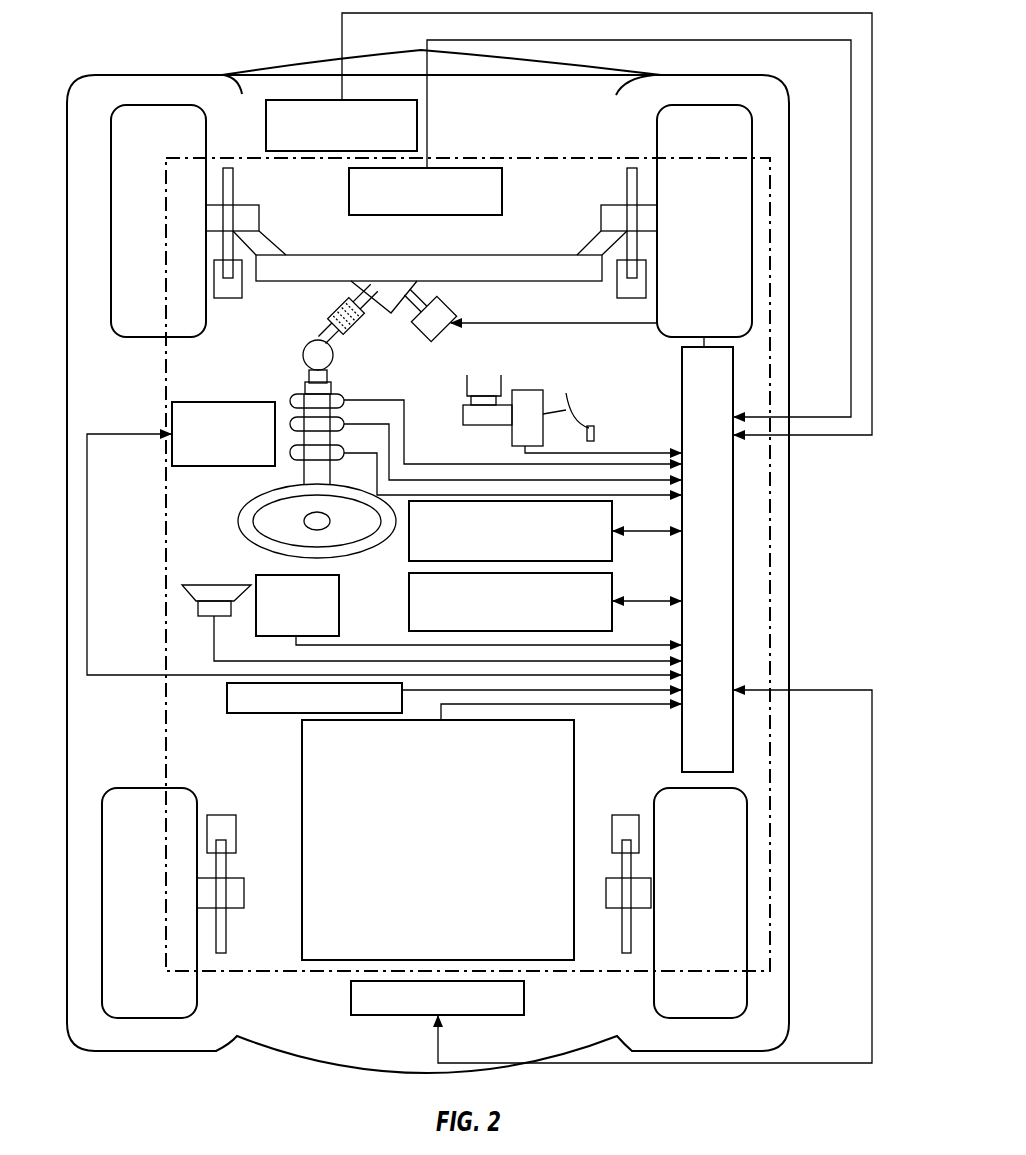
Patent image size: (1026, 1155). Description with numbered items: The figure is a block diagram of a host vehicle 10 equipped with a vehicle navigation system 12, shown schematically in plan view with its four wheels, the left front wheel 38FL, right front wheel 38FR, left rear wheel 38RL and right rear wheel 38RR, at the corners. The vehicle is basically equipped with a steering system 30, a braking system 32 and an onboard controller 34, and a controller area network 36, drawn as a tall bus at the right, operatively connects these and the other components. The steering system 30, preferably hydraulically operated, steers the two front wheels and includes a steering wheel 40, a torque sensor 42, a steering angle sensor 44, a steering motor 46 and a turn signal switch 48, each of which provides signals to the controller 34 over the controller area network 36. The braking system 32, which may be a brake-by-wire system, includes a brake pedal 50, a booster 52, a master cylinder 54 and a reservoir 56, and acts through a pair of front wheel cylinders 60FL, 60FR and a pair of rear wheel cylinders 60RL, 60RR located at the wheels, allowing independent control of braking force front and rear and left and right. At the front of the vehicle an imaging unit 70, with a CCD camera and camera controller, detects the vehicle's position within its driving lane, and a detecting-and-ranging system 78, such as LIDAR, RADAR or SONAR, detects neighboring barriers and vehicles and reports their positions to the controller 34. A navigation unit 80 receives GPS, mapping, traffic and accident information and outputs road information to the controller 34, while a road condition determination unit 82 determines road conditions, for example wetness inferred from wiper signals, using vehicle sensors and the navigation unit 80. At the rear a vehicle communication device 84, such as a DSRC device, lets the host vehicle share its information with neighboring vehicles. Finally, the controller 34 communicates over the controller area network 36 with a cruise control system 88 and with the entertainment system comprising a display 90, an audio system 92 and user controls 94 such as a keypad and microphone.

The host vehicle 10 is at (152, 44).
The vehicle navigation system 12 is at (163, 491).
The steering system 30 is at (195, 558).
The braking system 32 is at (534, 400).
The controller 34 is at (303, 760).
The controller area network 36 is at (683, 740).
The left front wheel 38FL is at (207, 147).
The right front wheel 38FR is at (658, 143).
The left rear wheel 38RL is at (198, 995).
The right rear wheel 38RR is at (653, 990).
The steering wheel 40 is at (245, 520).
The torque sensor 42 is at (300, 462).
The steering angle sensor 44 is at (295, 420).
The steering motor 46 is at (422, 338).
The turn signal switch 48 is at (298, 392).
The brake pedal 50 is at (597, 435).
The booster 52 is at (530, 392).
The master cylinder 54 is at (464, 412).
The reservoir 56 is at (468, 382).
The front wheel cylinder 60FL is at (228, 300).
The front wheel cylinder 60FR is at (618, 285).
The rear wheel cylinder 60RL is at (222, 817).
The rear wheel cylinder 60RR is at (628, 817).
The imaging unit 70 is at (350, 192).
The detecting-and-ranging system 78 is at (325, 102).
The navigation unit 80 is at (410, 548).
The road condition determination unit 82 is at (410, 605).
The vehicle communication device 84 is at (385, 1017).
The cruise control system 88 is at (228, 692).
The display 90 is at (268, 577).
The audio system 92 is at (190, 598).
The user controls 94 is at (222, 404).